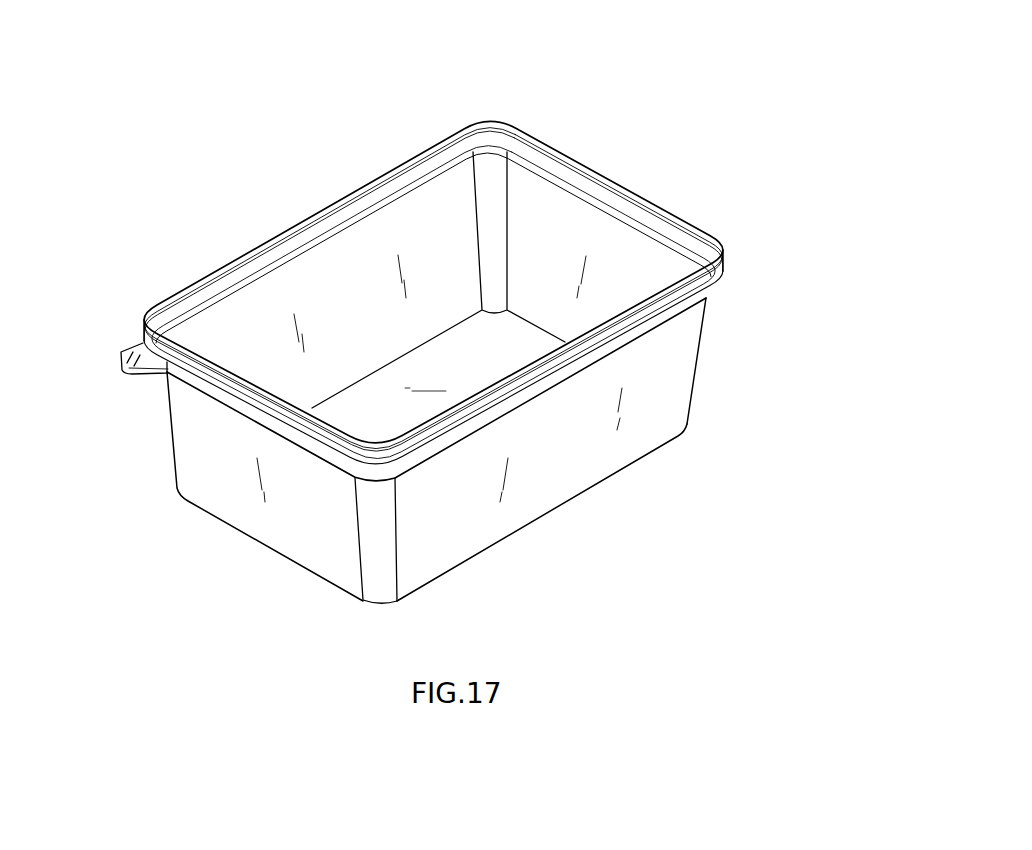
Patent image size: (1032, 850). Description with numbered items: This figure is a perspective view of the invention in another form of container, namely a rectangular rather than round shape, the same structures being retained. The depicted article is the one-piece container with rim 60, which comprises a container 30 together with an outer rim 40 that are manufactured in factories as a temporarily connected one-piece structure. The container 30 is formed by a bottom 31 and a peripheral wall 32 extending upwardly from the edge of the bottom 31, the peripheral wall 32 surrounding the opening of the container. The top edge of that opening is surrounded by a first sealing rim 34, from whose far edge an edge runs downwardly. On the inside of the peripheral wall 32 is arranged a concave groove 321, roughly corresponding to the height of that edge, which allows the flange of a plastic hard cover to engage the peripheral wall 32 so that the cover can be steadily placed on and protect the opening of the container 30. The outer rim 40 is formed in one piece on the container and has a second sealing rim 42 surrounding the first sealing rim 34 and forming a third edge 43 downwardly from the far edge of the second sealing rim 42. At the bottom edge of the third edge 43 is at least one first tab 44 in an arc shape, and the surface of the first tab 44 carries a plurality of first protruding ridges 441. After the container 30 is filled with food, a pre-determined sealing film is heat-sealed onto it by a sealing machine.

The one-piece container with rim 60 is at (664, 38).
The container 30 is at (693, 433).
The bottom 31 is at (593, 483).
The peripheral wall 32 is at (697, 367).
The concave groove 321 is at (307, 251).
The first sealing rim 34 is at (651, 207).
The outer rim 40 is at (734, 262).
The second sealing rim 42 is at (702, 233).
The third edge 43 is at (704, 293).
The first tab 44 is at (129, 345).
The first protruding ridges 441 is at (126, 368).